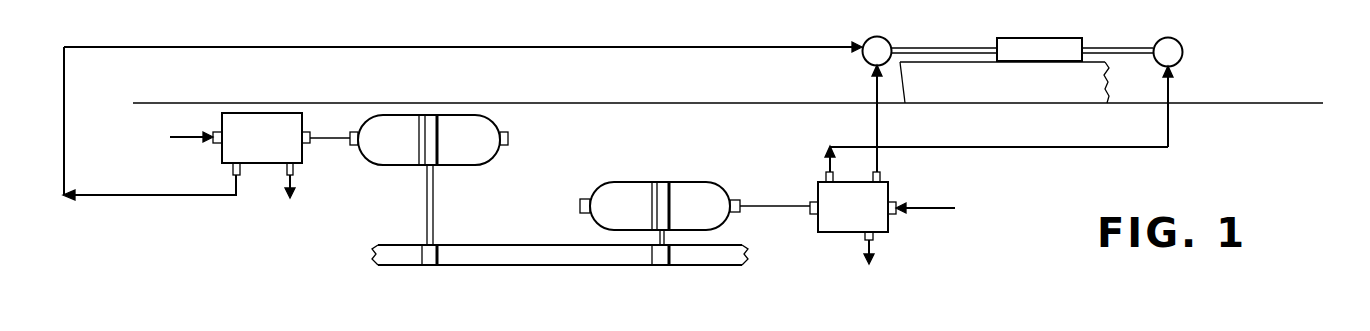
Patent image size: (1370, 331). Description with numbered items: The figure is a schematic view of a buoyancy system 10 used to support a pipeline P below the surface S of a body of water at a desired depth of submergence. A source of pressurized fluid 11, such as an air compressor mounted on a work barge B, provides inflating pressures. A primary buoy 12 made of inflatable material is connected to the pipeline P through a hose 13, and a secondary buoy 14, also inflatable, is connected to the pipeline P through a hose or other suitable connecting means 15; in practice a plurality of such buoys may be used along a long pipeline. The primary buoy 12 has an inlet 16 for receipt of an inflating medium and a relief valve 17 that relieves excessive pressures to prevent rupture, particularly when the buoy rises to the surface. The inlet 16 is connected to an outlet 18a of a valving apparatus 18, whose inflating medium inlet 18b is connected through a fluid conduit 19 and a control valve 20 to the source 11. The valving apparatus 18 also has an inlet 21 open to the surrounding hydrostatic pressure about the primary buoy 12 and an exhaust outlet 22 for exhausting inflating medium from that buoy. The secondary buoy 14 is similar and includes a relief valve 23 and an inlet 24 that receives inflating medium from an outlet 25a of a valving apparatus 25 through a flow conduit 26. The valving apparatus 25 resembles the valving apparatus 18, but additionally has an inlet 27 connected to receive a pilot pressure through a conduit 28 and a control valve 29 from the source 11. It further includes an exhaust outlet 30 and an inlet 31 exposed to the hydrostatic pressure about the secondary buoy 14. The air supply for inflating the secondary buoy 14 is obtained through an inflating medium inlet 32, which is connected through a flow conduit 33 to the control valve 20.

The buoyancy system 10 is at (338, 207).
The source of pressurized fluid 11 is at (1031, 53).
The primary buoy 12 is at (460, 128).
The hose 13 is at (426, 218).
The secondary buoy 14 is at (695, 191).
The connecting means 15 is at (670, 235).
The inlet 16 is at (353, 130).
The relief valve 17 is at (506, 129).
The valving apparatus 18 is at (262, 133).
The outlet 18a is at (314, 131).
The inflating medium inlet 18b is at (232, 170).
The fluid conduit 19 is at (152, 195).
The control valve 20 is at (862, 58).
The inlet 21 is at (218, 133).
The exhaust outlet 22 is at (285, 172).
The relief valve 23 is at (586, 199).
The inlet 24 is at (735, 200).
The valving apparatus 25 is at (849, 216).
The outlet 25a is at (814, 215).
The flow conduit 26 is at (778, 205).
The inlet 27 is at (826, 172).
The conduit 28 is at (1170, 140).
The control valve 29 is at (1183, 56).
The exhaust outlet 30 is at (867, 243).
The inlet 31 is at (898, 205).
The inflating medium inlet 32 is at (877, 176).
The flow conduit 33 is at (876, 130).
The work barge B is at (1065, 92).
The pipeline P is at (522, 252).
The surface S is at (626, 102).